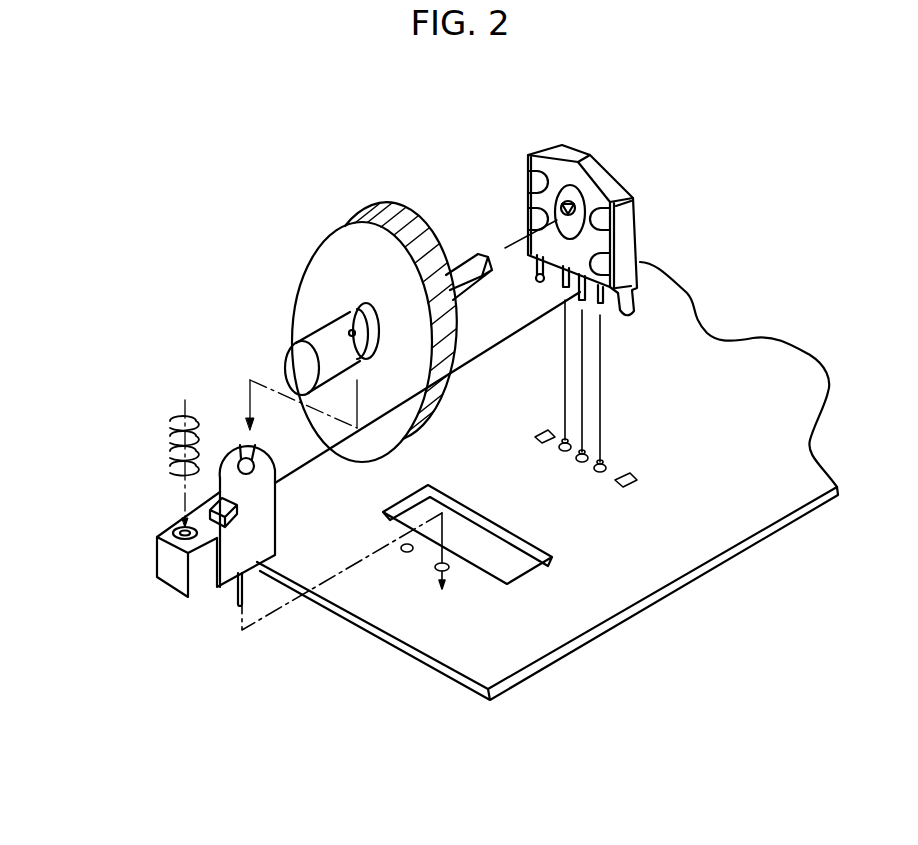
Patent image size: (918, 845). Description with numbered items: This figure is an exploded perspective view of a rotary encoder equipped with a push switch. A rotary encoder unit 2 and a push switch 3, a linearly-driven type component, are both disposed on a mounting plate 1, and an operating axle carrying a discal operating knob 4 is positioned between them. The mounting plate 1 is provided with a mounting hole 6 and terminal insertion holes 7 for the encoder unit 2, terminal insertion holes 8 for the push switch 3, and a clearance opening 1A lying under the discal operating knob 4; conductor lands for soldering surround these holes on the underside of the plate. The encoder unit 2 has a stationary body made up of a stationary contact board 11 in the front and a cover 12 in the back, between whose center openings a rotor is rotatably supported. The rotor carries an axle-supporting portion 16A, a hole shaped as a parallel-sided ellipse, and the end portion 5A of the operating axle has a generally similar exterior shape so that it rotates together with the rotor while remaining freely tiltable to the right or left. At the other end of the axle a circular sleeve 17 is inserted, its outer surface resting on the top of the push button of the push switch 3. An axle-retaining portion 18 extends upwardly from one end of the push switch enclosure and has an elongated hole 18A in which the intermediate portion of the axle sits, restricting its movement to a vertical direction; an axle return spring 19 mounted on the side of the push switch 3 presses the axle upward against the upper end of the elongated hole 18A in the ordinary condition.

The mounting plate 1 is at (763, 510).
The clearance opening 1A is at (517, 565).
The rotary encoder unit 2 is at (607, 178).
The push switch 3 is at (228, 570).
The discal operating knob 4 is at (340, 245).
The end portion of the operating axle 5A is at (467, 257).
The mounting hole 6 is at (627, 485).
The terminal insertion holes 7 is at (601, 472).
The terminal insertion holes 8 is at (430, 573).
The stationary contact board 11 is at (590, 238).
The cover 12 is at (628, 248).
The axle-supporting portion 16A is at (557, 200).
The circular sleeve 17 is at (328, 333).
The axle-retaining portion 18 is at (232, 470).
The elongated hole 18A is at (237, 448).
The axle return spring 19 is at (170, 442).